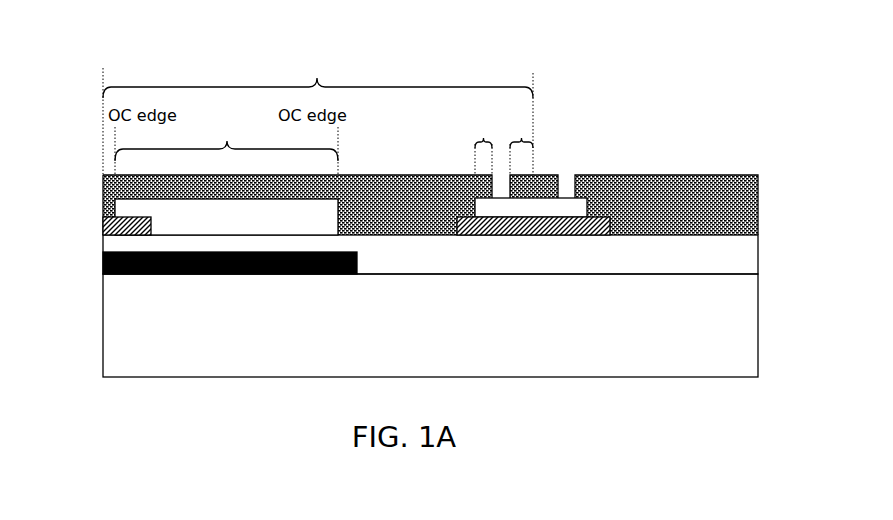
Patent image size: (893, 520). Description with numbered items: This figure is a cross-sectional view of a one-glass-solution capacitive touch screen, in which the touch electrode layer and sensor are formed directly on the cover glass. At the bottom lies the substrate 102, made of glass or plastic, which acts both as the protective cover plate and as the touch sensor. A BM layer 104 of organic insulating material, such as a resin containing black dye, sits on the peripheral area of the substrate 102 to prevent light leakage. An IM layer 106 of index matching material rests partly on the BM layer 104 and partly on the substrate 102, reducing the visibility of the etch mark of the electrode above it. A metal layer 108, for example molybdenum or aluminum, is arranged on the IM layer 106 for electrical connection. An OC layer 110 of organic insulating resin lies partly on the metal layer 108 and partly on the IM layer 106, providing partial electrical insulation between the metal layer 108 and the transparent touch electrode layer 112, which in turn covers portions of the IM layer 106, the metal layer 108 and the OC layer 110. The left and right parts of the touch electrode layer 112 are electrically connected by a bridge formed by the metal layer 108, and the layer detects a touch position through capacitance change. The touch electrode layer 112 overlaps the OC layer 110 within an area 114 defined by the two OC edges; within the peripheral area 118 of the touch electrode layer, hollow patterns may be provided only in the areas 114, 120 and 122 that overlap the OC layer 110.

The substrate 102 is at (430, 325).
The BM layer 104 is at (103, 262).
The IM layer 106 is at (430, 254).
The metal layer 108 is at (103, 227).
The OC layer 110 is at (573, 148).
The touch electrode layer 112 is at (373, 175).
The area defined by two OC edges 114 is at (226, 141).
The peripheral area 118 is at (318, 78).
The area overlapping with the OC layer 120 is at (483, 135).
The area overlapping with the OC layer 122 is at (521, 135).